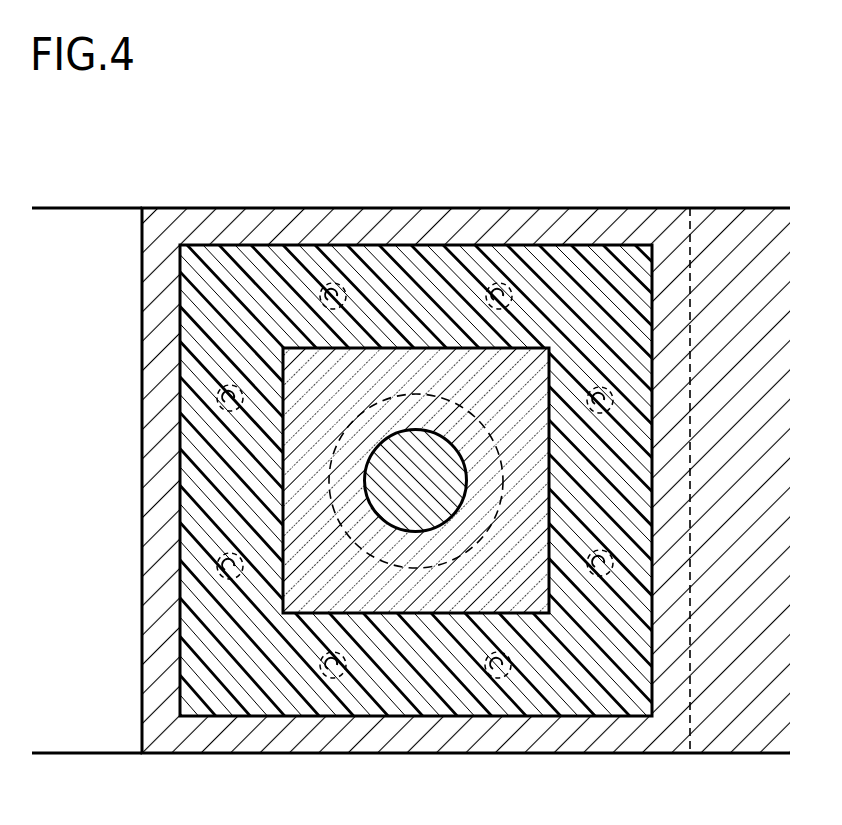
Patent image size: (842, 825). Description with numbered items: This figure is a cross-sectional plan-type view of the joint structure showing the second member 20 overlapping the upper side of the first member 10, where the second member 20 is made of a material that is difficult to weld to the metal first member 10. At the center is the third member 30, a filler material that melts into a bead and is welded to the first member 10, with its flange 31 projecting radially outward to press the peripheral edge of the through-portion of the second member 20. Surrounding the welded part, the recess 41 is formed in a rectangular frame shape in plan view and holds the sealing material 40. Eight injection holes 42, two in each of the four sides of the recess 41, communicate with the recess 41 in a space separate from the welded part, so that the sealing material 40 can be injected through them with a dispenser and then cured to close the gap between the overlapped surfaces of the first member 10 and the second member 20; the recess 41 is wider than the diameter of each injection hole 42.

The first member 10 is at (85, 215).
The second member 20 is at (740, 211).
The third member 30 is at (402, 527).
The flange 31 is at (443, 568).
The sealing material 40 is at (413, 246).
The recess 41 is at (568, 256).
The injection hole 42 is at (333, 283).